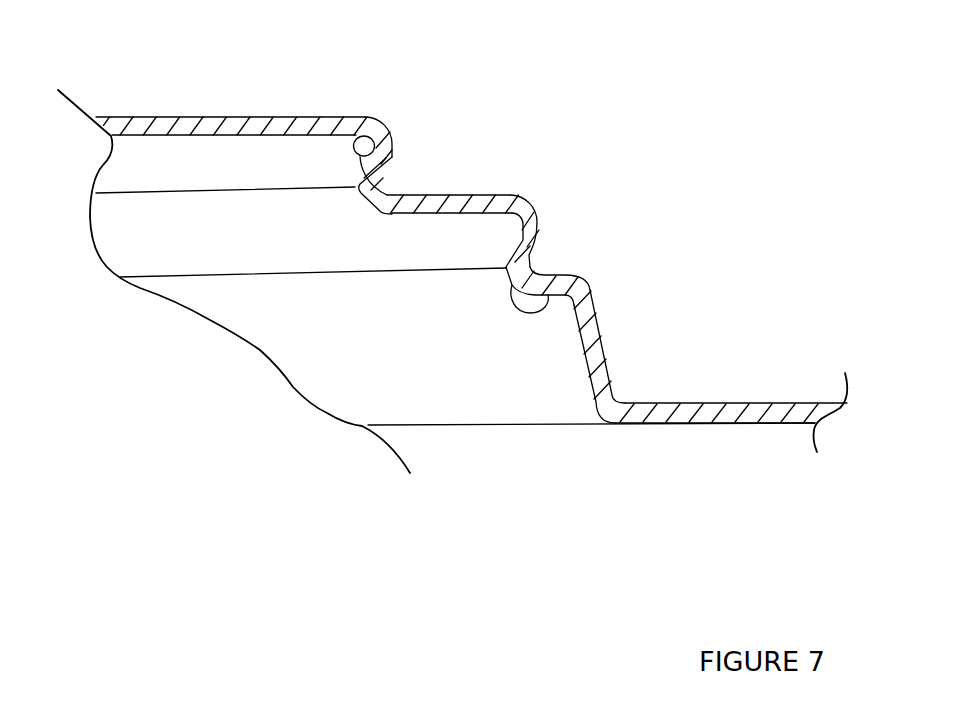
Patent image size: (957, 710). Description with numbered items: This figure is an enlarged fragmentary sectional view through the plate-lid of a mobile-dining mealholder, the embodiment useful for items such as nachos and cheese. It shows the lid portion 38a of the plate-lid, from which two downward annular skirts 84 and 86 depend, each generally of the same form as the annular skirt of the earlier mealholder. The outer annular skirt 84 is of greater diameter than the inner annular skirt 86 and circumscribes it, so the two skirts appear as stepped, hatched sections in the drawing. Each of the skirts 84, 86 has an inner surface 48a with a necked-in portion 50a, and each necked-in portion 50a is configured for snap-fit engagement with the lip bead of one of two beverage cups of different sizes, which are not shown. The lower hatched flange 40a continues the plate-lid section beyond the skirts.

The lid portion 38a is at (233, 124).
The inner surface 48a is at (364, 117).
The inner annular skirt 86 is at (389, 177).
The necked-in portion 50a is at (355, 187).
The outer annular skirt 84 is at (548, 233).
The lower flange of sealing strip 40a is at (670, 403).